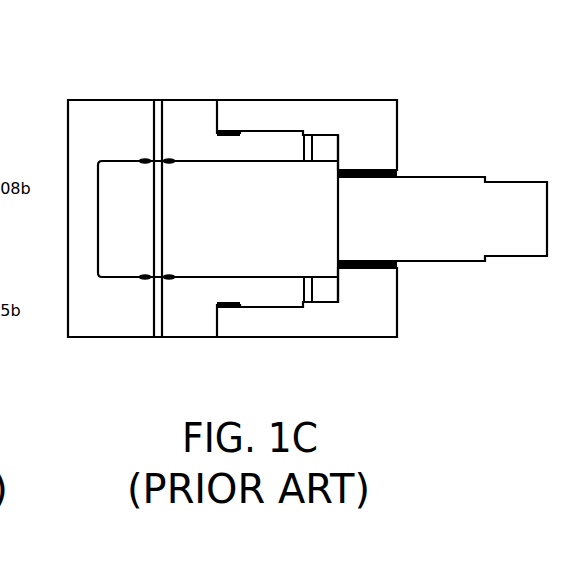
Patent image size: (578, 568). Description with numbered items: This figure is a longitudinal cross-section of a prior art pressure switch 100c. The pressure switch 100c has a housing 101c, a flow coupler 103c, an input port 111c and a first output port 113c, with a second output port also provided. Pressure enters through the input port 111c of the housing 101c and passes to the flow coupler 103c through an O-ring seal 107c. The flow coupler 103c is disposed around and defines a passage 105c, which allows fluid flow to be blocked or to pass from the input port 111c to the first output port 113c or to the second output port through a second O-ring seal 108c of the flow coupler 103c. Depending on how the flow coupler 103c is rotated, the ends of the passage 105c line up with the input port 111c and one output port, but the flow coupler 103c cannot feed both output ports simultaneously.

The pressure switch 100c is at (285, 49).
The housing 101c is at (80, 125).
The flow coupler 103c is at (395, 220).
The passage 105c is at (154, 222).
The O-ring seal 107c is at (173, 298).
The second O-ring seal 108c is at (143, 139).
The input port 111c is at (137, 349).
The first output port 113c is at (172, 89).